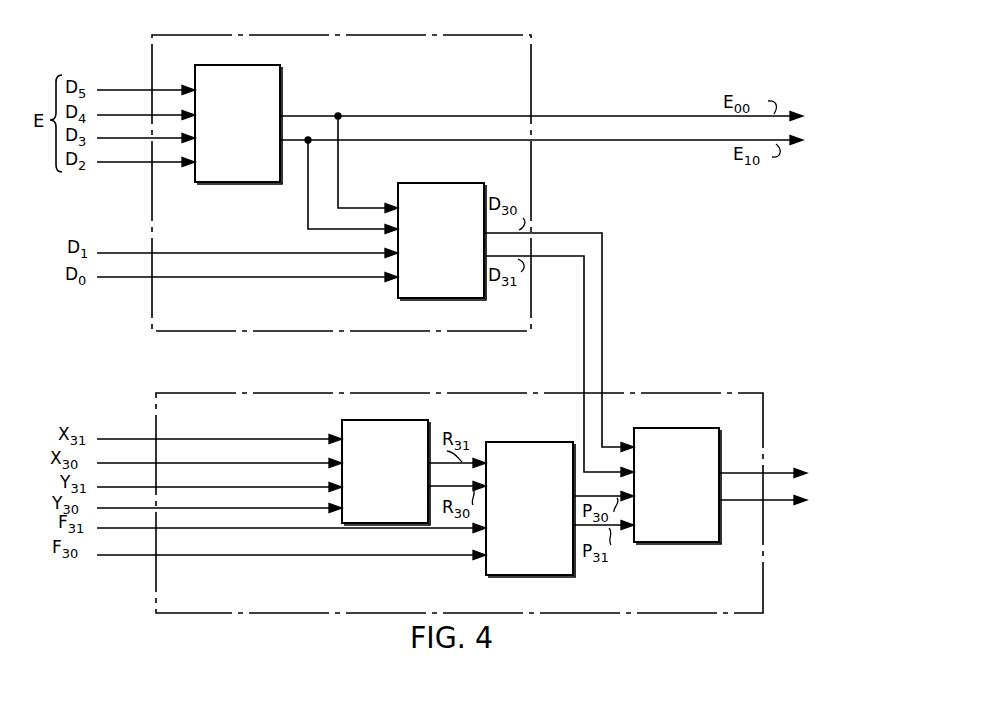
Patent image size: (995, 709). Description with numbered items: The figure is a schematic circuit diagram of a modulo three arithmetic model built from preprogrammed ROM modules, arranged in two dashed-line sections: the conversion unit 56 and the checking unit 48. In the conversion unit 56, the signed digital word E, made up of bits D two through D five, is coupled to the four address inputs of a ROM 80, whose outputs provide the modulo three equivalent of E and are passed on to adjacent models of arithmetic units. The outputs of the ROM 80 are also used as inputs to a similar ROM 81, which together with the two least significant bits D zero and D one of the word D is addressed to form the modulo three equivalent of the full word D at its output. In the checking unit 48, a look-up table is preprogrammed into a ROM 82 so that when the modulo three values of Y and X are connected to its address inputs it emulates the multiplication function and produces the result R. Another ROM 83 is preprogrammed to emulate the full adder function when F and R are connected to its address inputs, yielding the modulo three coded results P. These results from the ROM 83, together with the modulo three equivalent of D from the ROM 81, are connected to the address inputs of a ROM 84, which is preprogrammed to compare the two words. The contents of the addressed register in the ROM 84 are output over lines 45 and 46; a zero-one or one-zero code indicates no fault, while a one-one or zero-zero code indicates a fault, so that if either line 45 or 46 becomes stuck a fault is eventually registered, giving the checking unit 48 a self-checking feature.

The conversion unit 56 is at (332, 62).
The checking unit 48 is at (368, 594).
The ROM 80 is at (262, 183).
The ROM 81 is at (465, 300).
The ROM 82 is at (408, 420).
The ROM 83 is at (540, 442).
The ROM 84 is at (687, 428).
The output line 46 is at (778, 471).
The output line 45 is at (778, 502).